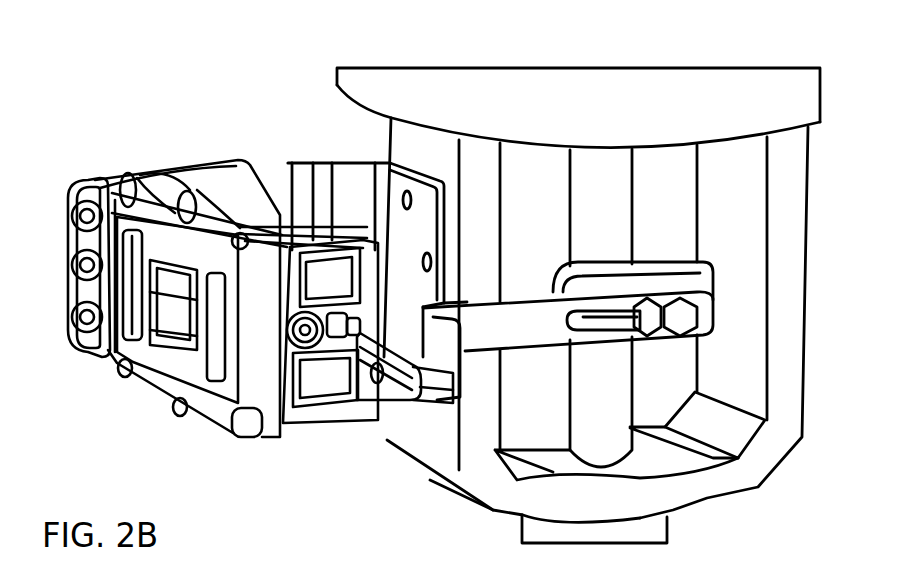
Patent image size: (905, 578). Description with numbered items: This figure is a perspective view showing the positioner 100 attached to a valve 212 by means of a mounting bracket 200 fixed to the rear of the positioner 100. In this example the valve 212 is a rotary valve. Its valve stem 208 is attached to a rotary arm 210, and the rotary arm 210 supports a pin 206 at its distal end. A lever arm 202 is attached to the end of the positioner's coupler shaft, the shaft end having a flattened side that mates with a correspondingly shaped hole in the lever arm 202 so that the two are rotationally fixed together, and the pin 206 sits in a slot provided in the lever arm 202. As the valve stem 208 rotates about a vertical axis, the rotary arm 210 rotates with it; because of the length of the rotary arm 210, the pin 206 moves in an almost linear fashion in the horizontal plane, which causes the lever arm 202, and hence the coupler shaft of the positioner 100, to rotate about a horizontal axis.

The positioner 100 is at (81, 138).
The mounting bracket 200 is at (338, 164).
The lever arm 202 is at (387, 410).
The pin 206 is at (372, 404).
The valve stem 208 is at (632, 165).
The rotary arm 210 is at (525, 303).
The valve 212 is at (643, 112).